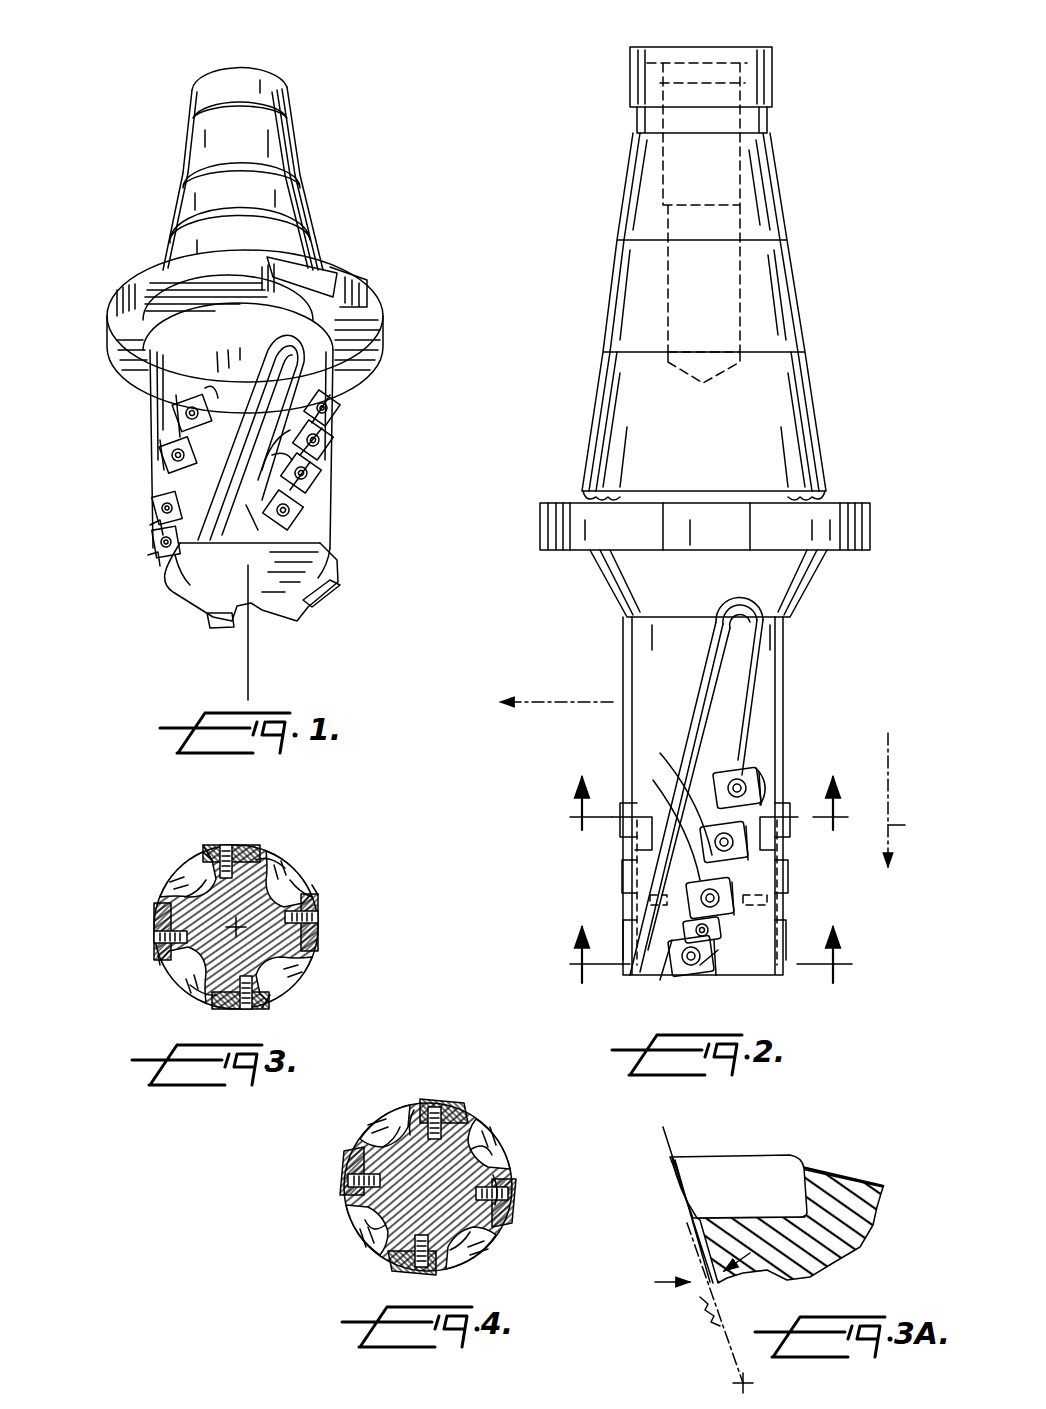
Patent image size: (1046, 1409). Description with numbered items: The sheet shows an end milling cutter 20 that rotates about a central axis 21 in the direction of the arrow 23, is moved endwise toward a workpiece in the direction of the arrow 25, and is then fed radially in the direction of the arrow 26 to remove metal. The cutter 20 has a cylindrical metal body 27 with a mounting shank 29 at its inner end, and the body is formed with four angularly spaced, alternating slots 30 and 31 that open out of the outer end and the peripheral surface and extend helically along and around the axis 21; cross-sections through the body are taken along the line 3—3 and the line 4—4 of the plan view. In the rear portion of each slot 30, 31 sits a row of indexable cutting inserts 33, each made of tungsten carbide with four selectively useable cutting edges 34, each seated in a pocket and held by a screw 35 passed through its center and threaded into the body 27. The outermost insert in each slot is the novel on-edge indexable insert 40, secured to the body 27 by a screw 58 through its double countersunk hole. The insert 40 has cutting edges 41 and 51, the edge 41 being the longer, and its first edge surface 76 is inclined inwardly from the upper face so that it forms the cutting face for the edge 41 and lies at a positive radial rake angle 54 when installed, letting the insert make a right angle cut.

In FIG. 1, the end milling cutter 20 is at (155, 135).
In FIG. 2, the end milling cutter 20 is at (868, 630).
In FIG. 1, the central axis 21 is at (248, 683).
In FIG. 3, the central axis 21 is at (248, 905).
In FIG. 3A, the central axis 21 is at (740, 1378).
In FIG. 1, the arrow indicating direction of rotation 23 is at (210, 667).
In FIG. 3, the arrow indicating direction of rotation 23 is at (128, 902).
In FIG. 4, the arrow indicating direction of rotation 23 is at (303, 1186).
In FIG. 2, the arrow indicating axial feed direction 25 is at (905, 825).
In FIG. 2, the arrow indicating radial feed direction 26 is at (537, 700).
In FIG. 1, the cylindrical metal body 27 is at (195, 382).
In FIG. 2, the cylindrical metal body 27 is at (650, 667).
In FIG. 3, the cylindrical metal body 27 is at (303, 947).
In FIG. 4, the cylindrical metal body 27 is at (480, 1125).
In FIG. 3A, the cylindrical metal body 27 is at (850, 1190).
In FIG. 1, the mounting shank 29 is at (175, 225).
In FIG. 2, the mounting shank 29 is at (808, 425).
In FIG. 1, the slot 30 is at (183, 580).
In FIG. 3, the slot 30 is at (292, 867).
In FIG. 4, the slot 30 is at (490, 1158).
In FIG. 1, the slot 31 is at (252, 537).
In FIG. 2, the slot 31 is at (723, 700).
In FIG. 3, the slot 31 is at (210, 873).
In FIG. 4, the slot 31 is at (420, 1125).
In FIG. 1, the indexable cutting insert 33 is at (168, 410).
In FIG. 2, the indexable cutting insert 33 is at (770, 788).
In FIG. 4, the indexable cutting insert 33 is at (461, 1100).
In FIG. 1, the cutting edge 34 is at (180, 432).
In FIG. 2, the cutting edge 34 is at (697, 787).
In FIG. 4, the cutting edge 34 is at (417, 1105).
In FIG. 2, the screw 35 is at (766, 778).
In FIG. 4, the screw 35 is at (434, 1105).
In FIG. 1, the insert 40 is at (153, 511).
In FIG. 2, the insert 40 is at (615, 945).
In FIG. 3, the insert 40 is at (247, 838).
In FIG. 3A, the insert 40 is at (736, 1153).
In FIG. 1, the cutting edge 41 is at (240, 618).
In FIG. 2, the cutting edge 41 is at (670, 958).
In FIG. 3, the cutting edge 41 is at (205, 848).
In FIG. 3A, the cutting edge 41 is at (672, 1160).
In FIG. 1, the cutting edge 51 is at (158, 532).
In FIG. 3, the cutting edge 51 is at (312, 892).
In FIG. 3A, the positive radial rake angle 54 is at (700, 1285).
In FIG. 2, the screw 58 is at (715, 953).
In FIG. 3, the screw 58 is at (226, 845).
In FIG. 3A, the first edge surface 76 is at (683, 1198).
In FIG. 2, the section line 3— 3 is at (711, 966).
In FIG. 2, the section line 4— 4 is at (709, 818).